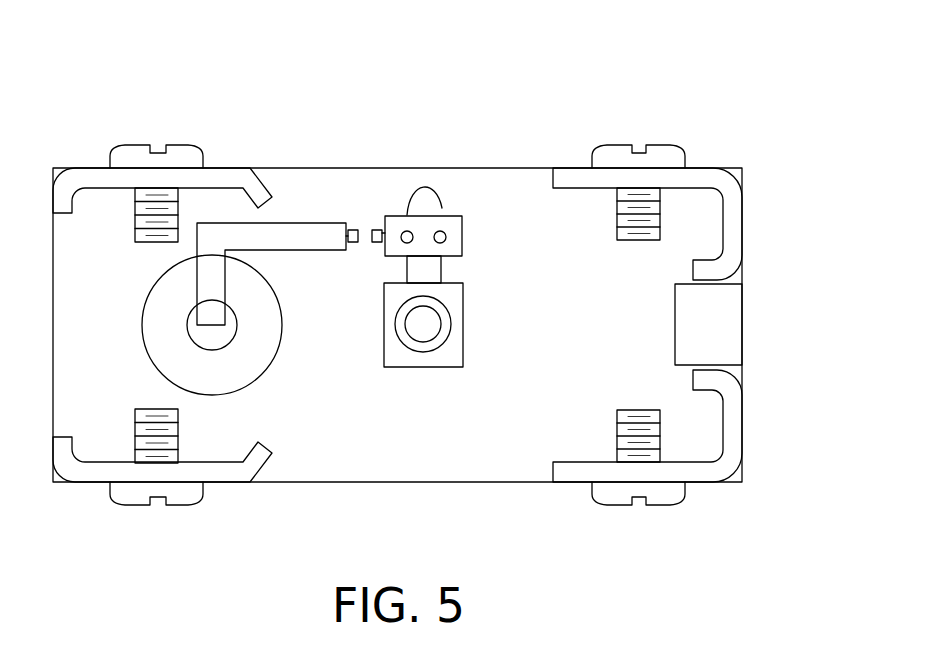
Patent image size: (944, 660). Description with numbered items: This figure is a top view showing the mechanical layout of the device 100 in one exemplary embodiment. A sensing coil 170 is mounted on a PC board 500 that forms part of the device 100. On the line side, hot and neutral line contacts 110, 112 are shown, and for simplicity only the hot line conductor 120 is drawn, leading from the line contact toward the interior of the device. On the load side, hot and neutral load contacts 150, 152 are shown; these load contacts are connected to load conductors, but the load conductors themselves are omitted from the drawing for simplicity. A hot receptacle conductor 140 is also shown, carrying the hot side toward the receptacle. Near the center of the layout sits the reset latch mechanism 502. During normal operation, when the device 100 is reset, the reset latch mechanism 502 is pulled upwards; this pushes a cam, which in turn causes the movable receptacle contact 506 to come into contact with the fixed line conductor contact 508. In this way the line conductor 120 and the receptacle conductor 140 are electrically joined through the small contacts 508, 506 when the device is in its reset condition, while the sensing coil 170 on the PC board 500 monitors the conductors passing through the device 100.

The device 100 is at (712, 94).
The hot line contact 110 is at (226, 177).
The neutral line contact 112 is at (76, 472).
The hot line conductor 120 is at (307, 233).
The hot receptacle conductor 140 is at (427, 227).
The hot load contact 150 is at (733, 213).
The neutral load contact 152 is at (733, 428).
The sensing coil 170 is at (165, 328).
The PC board 500 is at (608, 300).
The reset latch mechanism 502 is at (502, 279).
The movable receptacle contact 506 is at (376, 230).
The fixed line conductor contact 508 is at (352, 230).